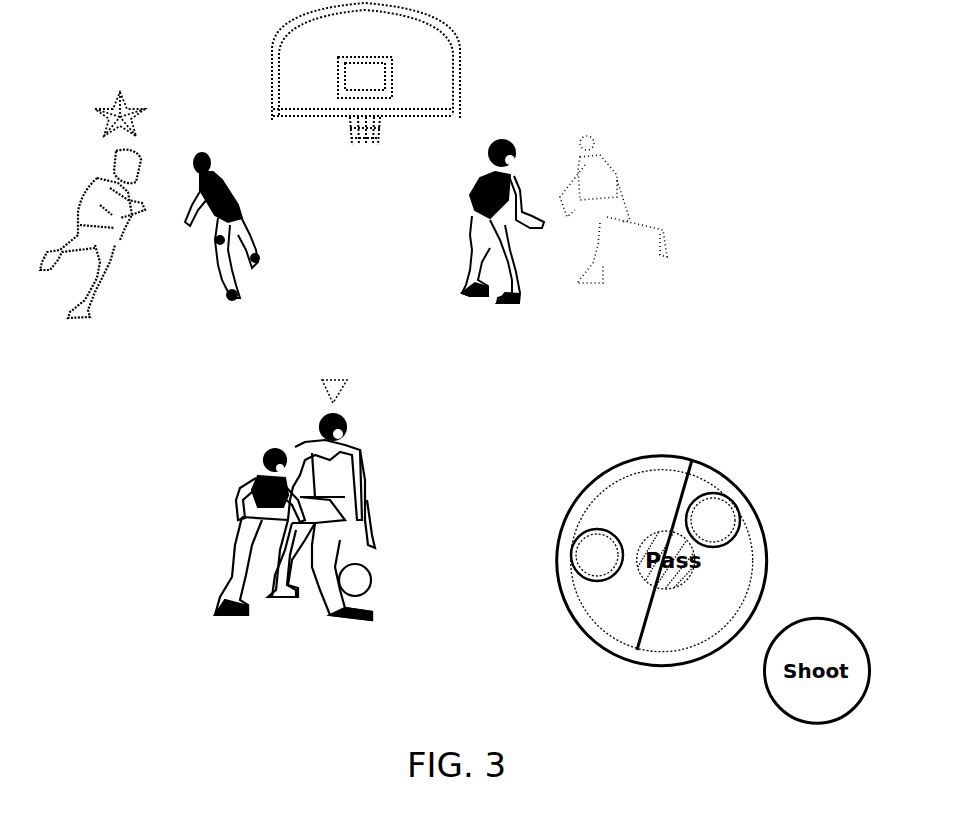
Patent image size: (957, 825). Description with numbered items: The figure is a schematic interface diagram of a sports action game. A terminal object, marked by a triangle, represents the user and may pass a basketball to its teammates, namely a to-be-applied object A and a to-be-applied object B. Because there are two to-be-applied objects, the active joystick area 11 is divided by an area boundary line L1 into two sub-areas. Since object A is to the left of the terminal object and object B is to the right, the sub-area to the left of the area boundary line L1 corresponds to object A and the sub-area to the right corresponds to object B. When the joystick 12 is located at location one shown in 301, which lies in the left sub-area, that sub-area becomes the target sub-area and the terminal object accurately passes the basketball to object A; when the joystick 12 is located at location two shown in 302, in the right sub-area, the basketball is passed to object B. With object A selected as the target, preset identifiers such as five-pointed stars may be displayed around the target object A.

The active joystick area 11 is at (733, 482).
The joystick 12 is at (655, 537).
The location 1 301 is at (579, 575).
The location 2 302 is at (740, 527).
The area boundary line L1 is at (669, 541).
The to-be-applied object A is at (89, 234).
The to-be-applied object B is at (613, 209).